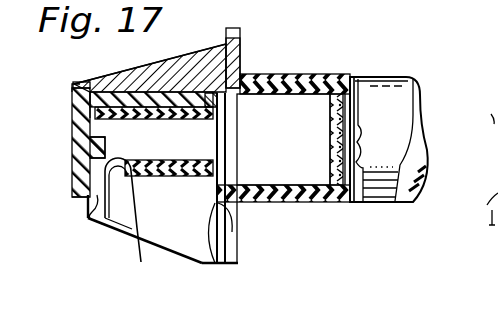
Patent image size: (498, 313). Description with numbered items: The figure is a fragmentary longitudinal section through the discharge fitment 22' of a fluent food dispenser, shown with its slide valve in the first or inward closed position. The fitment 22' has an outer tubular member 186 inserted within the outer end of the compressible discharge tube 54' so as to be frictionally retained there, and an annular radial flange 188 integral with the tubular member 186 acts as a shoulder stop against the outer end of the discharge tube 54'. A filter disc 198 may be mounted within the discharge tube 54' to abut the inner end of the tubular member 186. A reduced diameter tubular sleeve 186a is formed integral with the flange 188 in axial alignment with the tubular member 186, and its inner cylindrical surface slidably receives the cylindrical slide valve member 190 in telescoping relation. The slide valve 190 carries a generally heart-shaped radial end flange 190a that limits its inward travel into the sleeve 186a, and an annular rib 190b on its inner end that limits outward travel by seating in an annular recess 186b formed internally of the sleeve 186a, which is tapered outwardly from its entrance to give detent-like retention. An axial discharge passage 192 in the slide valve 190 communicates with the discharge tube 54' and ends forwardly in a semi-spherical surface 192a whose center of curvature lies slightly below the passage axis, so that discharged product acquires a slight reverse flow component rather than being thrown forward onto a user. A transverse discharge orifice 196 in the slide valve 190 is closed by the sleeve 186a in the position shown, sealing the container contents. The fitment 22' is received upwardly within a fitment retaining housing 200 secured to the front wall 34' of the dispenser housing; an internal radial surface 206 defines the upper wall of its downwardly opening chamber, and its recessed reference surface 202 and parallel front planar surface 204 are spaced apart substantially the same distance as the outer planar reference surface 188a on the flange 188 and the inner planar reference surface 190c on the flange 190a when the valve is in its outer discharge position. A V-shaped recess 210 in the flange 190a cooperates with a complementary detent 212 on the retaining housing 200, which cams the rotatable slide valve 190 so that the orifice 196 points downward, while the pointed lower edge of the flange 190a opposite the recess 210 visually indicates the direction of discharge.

The fitment 22' is at (53, 194).
The front wall 34' is at (264, 52).
The compressible discharge tube 54' is at (389, 114).
The outer tubular member 186 is at (318, 203).
The tubular sleeve 186a is at (178, 160).
The annular recess 186b is at (199, 190).
The annular radial flange 188 is at (238, 247).
The outer planar reference surface 188a is at (222, 264).
The slide valve member 190 is at (72, 160).
The radial end flange 190a is at (86, 197).
The annular rib 190b is at (204, 126).
The inner planar reference surface 190c is at (88, 220).
The axial discharge passage 192 is at (203, 167).
The semi-spherical surface 192a is at (74, 142).
The transverse discharge orifice 196 is at (145, 244).
The filter disc 198 is at (347, 75).
The fitment retaining housing 200 is at (150, 76).
The recessed reference surface 202 is at (214, 40).
The front planar surface 204 is at (87, 219).
The internal radial surface 206 is at (95, 69).
The V-shaped recess 210 is at (75, 108).
The detent 212 is at (73, 86).